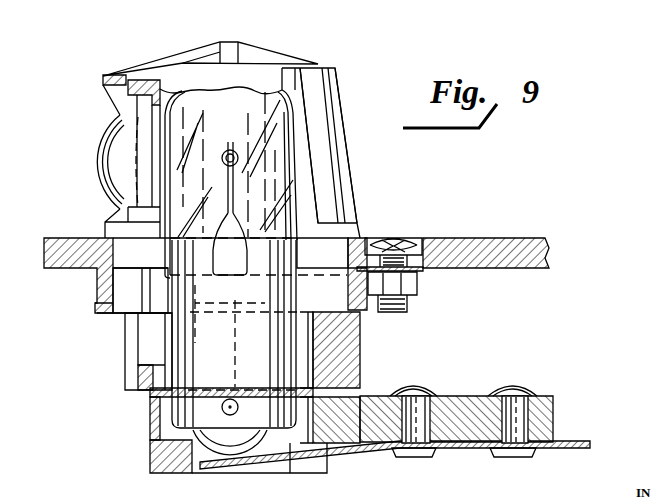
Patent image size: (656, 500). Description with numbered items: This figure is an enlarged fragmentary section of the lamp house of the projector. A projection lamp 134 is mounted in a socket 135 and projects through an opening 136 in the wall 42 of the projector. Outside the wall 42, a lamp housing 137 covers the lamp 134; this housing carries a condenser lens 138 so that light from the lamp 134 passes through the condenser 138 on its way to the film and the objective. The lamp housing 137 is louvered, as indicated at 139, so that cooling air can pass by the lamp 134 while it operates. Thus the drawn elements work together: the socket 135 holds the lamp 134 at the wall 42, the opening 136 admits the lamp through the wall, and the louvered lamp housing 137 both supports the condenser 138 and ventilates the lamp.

The lamp housing 137 is at (318, 65).
The louvers 139 is at (325, 128).
The projection lamp 134 is at (295, 177).
The condenser lens 138 is at (97, 174).
The wall 42 is at (493, 240).
The opening 136 is at (95, 303).
The socket 135 is at (124, 343).